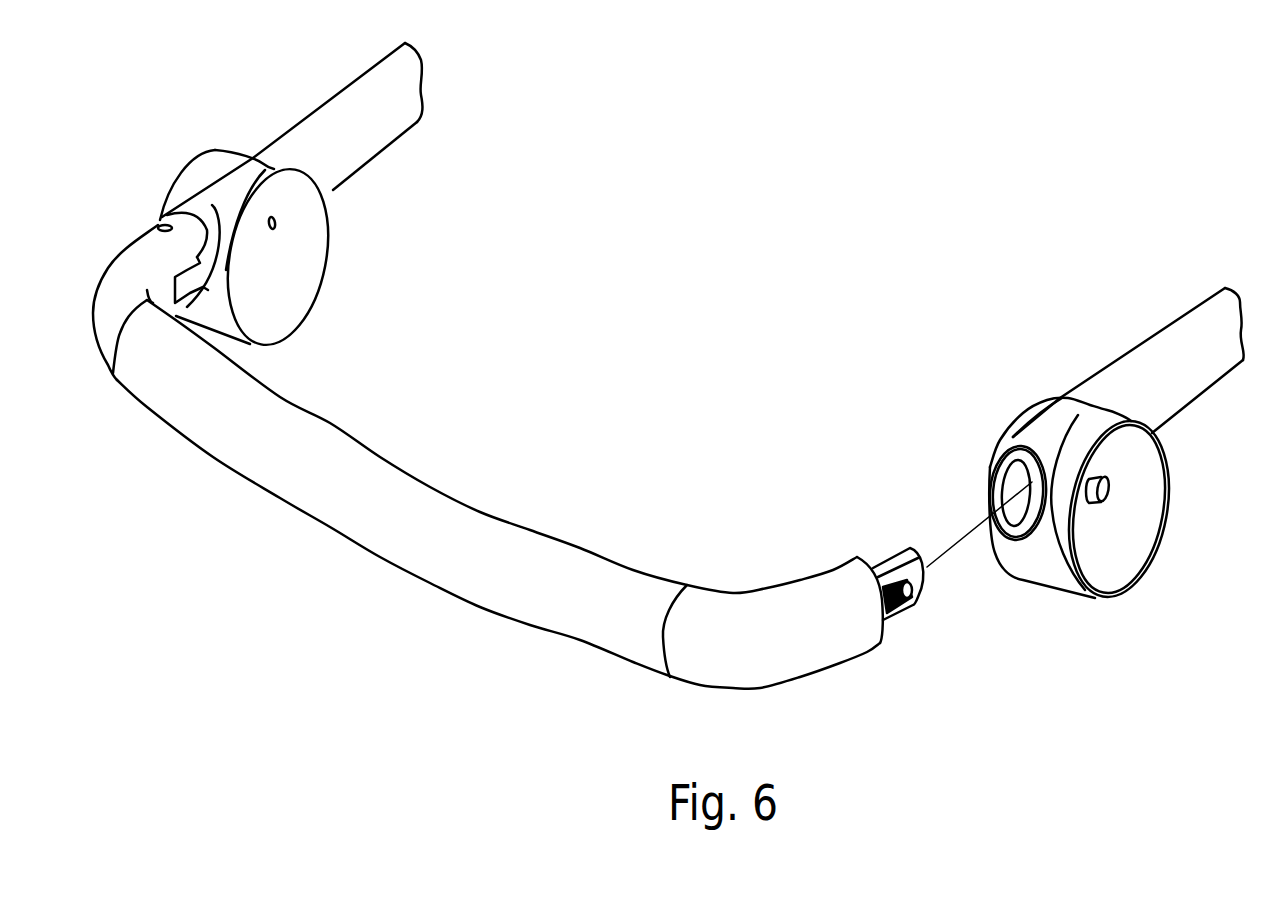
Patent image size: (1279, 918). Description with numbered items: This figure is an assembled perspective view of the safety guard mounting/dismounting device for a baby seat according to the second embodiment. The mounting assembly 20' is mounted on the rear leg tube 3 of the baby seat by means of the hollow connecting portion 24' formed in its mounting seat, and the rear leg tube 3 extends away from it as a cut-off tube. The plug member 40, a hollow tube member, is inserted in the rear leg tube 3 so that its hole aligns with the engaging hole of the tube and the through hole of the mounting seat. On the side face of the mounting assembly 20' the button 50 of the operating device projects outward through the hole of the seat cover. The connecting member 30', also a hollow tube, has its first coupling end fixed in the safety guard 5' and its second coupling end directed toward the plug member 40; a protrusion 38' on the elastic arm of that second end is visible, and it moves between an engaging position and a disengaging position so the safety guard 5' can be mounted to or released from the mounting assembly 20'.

The safety guard 5' is at (488, 457).
The rear leg tube 3 is at (1150, 344).
The mounting assembly 20' is at (1072, 473).
The hollow connecting portion 24' is at (1001, 415).
The plug member 40 is at (989, 478).
The button 50 is at (1114, 493).
The connecting member 30' is at (873, 552).
The protrusion 38' is at (939, 619).